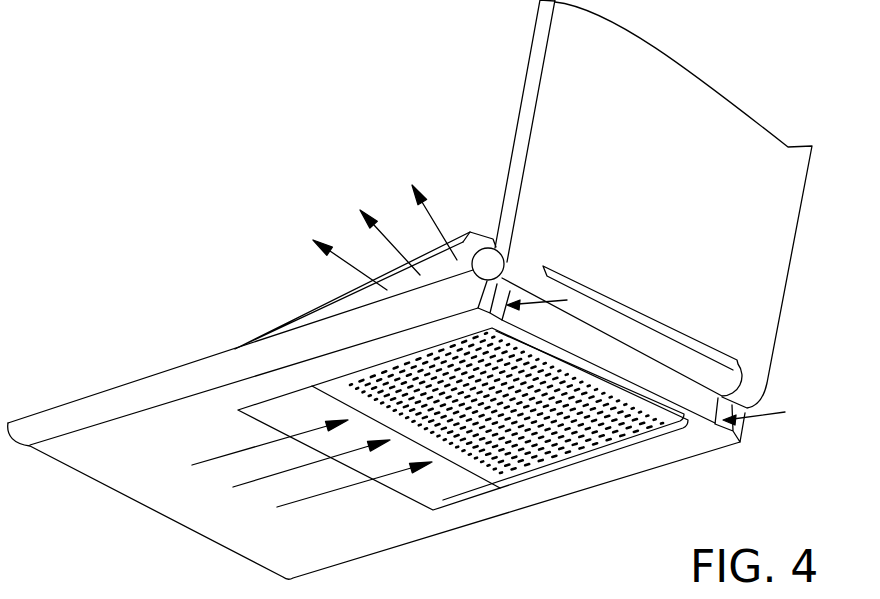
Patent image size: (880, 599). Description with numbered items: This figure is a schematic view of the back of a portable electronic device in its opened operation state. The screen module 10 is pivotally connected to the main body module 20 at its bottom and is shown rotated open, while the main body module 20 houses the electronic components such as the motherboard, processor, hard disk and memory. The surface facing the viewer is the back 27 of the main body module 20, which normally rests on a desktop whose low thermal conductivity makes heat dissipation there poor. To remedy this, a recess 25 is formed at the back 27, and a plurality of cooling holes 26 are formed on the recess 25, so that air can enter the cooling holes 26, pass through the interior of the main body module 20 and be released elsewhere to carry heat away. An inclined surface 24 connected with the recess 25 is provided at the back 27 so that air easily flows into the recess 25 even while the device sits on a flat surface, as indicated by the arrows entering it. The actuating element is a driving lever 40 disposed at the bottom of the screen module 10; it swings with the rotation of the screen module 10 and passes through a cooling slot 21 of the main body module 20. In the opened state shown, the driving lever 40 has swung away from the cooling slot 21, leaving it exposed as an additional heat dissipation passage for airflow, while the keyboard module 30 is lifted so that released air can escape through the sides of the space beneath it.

The screen module 10 is at (790, 148).
The main body module 20 is at (115, 389).
The cooling slot 21 is at (745, 436).
The inclined surface 24 is at (436, 496).
The recess 25 is at (623, 448).
The cooling holes 26 is at (503, 478).
The back 27 is at (590, 488).
The keyboard module 30 is at (333, 299).
The driving lever 40 is at (479, 232).